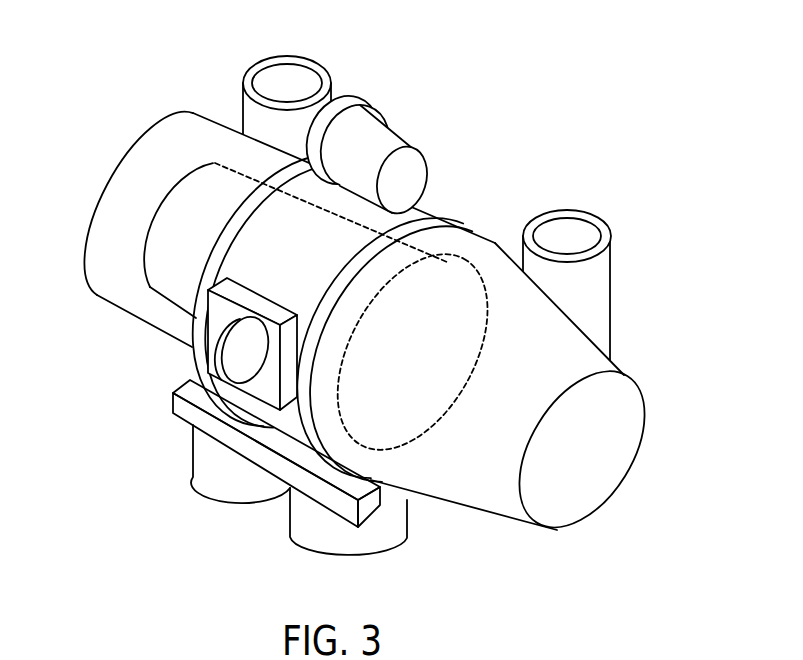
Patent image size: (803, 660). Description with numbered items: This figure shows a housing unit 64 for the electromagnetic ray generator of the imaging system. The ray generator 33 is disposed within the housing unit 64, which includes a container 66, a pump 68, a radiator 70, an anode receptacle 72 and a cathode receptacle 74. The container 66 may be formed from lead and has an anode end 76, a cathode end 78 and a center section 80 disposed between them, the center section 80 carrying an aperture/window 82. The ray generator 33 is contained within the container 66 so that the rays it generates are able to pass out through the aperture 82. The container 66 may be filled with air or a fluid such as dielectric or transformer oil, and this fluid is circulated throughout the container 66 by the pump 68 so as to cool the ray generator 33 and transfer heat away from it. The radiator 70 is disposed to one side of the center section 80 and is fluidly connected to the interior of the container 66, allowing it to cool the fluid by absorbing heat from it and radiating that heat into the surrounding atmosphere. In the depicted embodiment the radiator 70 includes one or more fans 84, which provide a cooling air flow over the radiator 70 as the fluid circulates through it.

The housing unit 64 is at (113, 74).
The container 66 is at (618, 452).
The pump 68 is at (417, 176).
The radiator 70 is at (172, 405).
The anode receptacle 72 is at (286, 56).
The cathode receptacle 74 is at (604, 232).
The anode end 76 is at (106, 326).
The cathode end 78 is at (500, 538).
The center section 80 is at (290, 428).
The aperture/window 82 is at (225, 358).
The fans 84 is at (192, 478).
The ray generator 33 is at (455, 452).